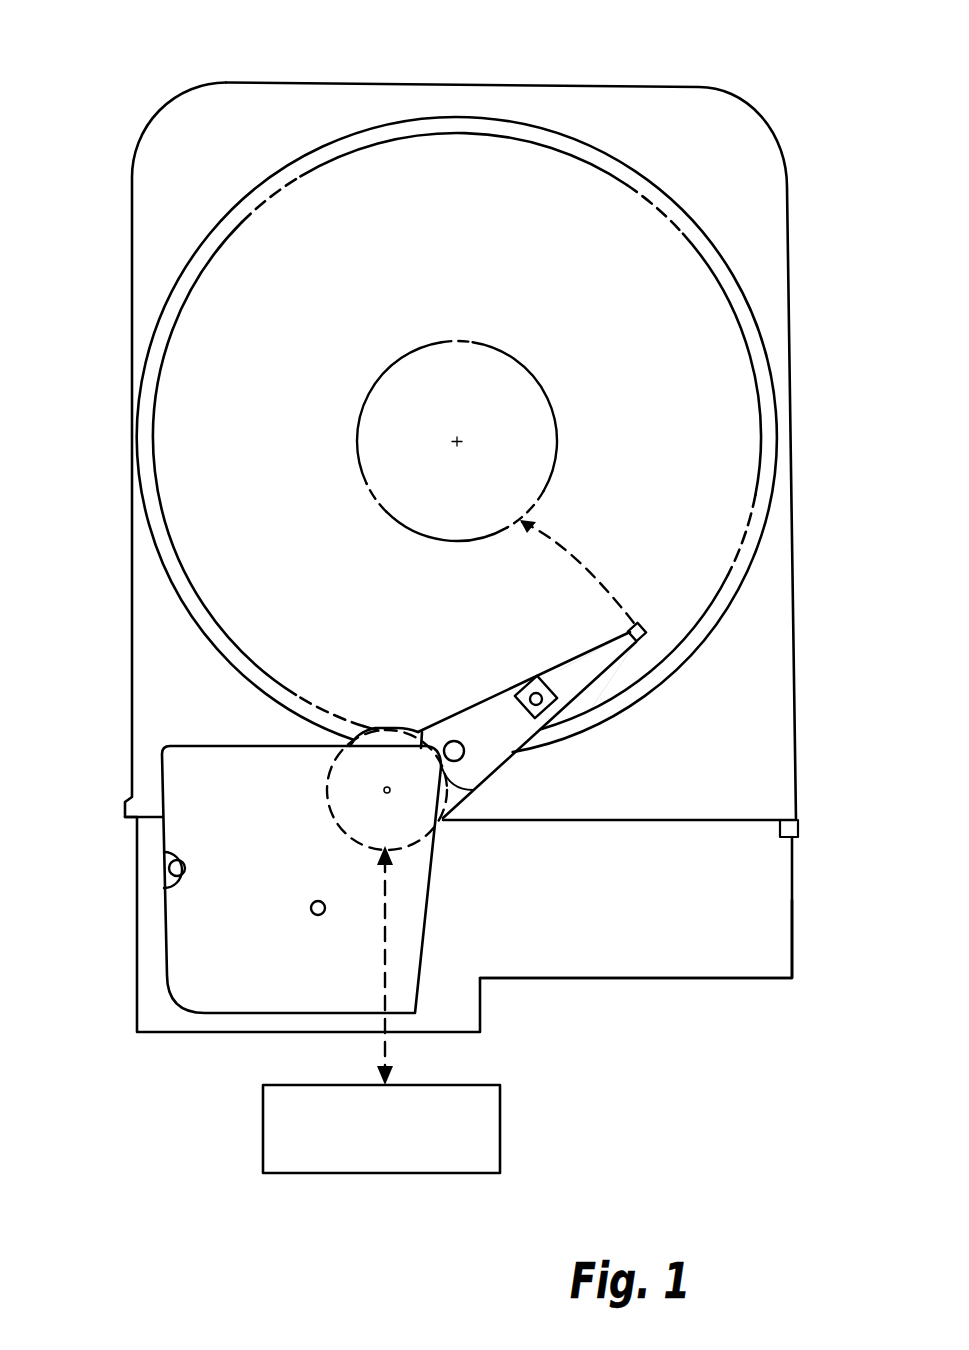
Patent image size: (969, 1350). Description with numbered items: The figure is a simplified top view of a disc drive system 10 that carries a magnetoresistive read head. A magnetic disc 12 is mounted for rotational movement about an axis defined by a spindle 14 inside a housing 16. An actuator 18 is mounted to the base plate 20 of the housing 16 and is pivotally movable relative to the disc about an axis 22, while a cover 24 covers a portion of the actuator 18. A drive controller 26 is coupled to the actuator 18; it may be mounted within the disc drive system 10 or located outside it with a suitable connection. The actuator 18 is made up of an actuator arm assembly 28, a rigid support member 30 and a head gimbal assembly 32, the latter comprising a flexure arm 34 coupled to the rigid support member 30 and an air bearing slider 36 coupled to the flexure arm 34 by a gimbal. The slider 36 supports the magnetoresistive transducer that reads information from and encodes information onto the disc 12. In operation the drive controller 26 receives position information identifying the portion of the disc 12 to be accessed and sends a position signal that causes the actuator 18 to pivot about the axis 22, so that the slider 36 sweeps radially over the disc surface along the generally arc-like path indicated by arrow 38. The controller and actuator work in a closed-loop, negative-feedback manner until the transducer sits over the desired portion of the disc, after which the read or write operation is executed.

The disc drive system 10 is at (300, 72).
The magnetic disc 12 is at (464, 237).
The spindle 14 is at (457, 497).
The housing 16 is at (788, 260).
The actuator 18 is at (376, 758).
The base plate 20 is at (630, 980).
The axis 22 is at (385, 790).
The cover 24 is at (185, 837).
The drive controller 26 is at (502, 1092).
The actuator arm assembly 28 is at (393, 728).
The rigid support member 30 is at (470, 773).
The head gimbal assembly 32 is at (593, 648).
The flexure arm 34 is at (560, 670).
The air bearing slider 36 is at (668, 680).
The arrow 38 is at (568, 548).